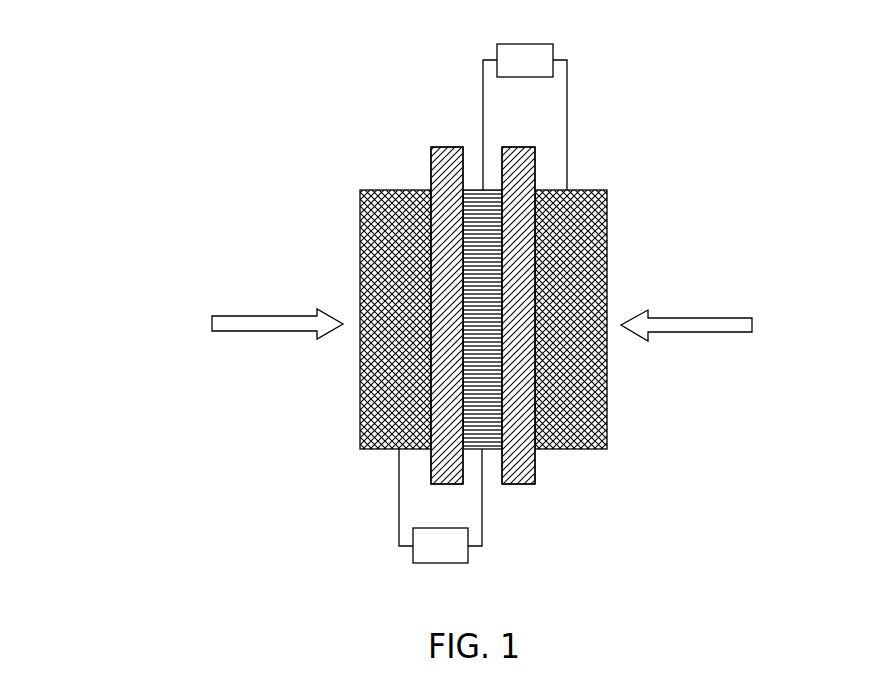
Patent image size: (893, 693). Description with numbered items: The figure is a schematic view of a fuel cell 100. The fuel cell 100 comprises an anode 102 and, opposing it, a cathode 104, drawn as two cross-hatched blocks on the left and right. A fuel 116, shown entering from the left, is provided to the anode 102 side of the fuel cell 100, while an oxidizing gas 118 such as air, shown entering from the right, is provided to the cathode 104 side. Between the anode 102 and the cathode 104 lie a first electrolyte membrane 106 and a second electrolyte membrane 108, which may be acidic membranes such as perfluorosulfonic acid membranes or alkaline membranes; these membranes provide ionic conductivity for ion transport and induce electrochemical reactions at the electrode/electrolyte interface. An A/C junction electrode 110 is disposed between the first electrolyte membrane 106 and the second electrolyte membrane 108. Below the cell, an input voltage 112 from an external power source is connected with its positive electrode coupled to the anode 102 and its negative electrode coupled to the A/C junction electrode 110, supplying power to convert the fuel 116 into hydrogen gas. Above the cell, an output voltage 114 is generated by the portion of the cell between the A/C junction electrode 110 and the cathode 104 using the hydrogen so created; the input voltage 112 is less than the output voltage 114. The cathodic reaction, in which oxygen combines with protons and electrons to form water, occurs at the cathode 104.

The fuel cell 100 is at (672, 90).
The anode 102 is at (360, 414).
The cathode 104 is at (607, 414).
The first electrolyte membrane 106 is at (447, 147).
The second electrolyte membrane 108 is at (515, 484).
The A/C junction electrode 110 is at (490, 188).
The input voltage 112 is at (440, 563).
The output voltage 114 is at (553, 50).
The fuel 116 is at (265, 316).
The oxidizing gas 118 is at (710, 318).